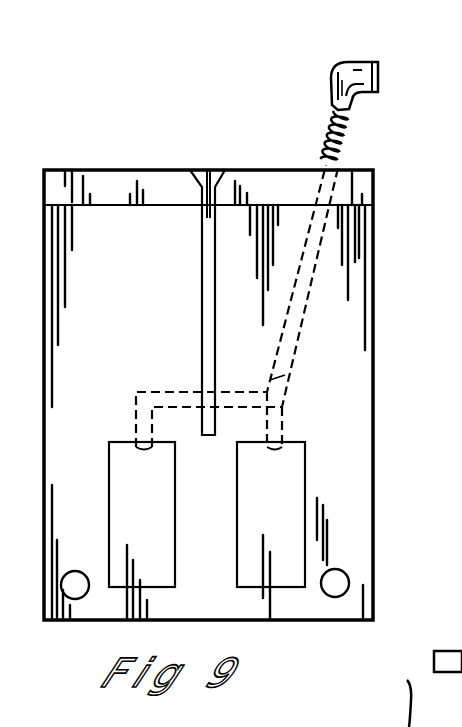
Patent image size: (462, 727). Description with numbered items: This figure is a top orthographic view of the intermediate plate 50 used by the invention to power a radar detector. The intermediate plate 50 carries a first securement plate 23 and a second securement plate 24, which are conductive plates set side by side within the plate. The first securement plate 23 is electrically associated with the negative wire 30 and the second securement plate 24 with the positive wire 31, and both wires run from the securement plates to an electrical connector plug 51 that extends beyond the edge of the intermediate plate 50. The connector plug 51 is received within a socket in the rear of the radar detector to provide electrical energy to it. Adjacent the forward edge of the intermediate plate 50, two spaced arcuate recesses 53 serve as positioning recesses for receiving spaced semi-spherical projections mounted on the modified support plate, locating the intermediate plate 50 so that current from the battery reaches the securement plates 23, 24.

The intermediate plate 50 is at (374, 371).
The electrical connector plug 51 is at (371, 96).
The negative wire 30 is at (170, 390).
The positive wire 31 is at (289, 372).
The first securement plate 23 is at (156, 492).
The second securement plate 24 is at (286, 490).
The arcuate recesses 53 is at (74, 578).